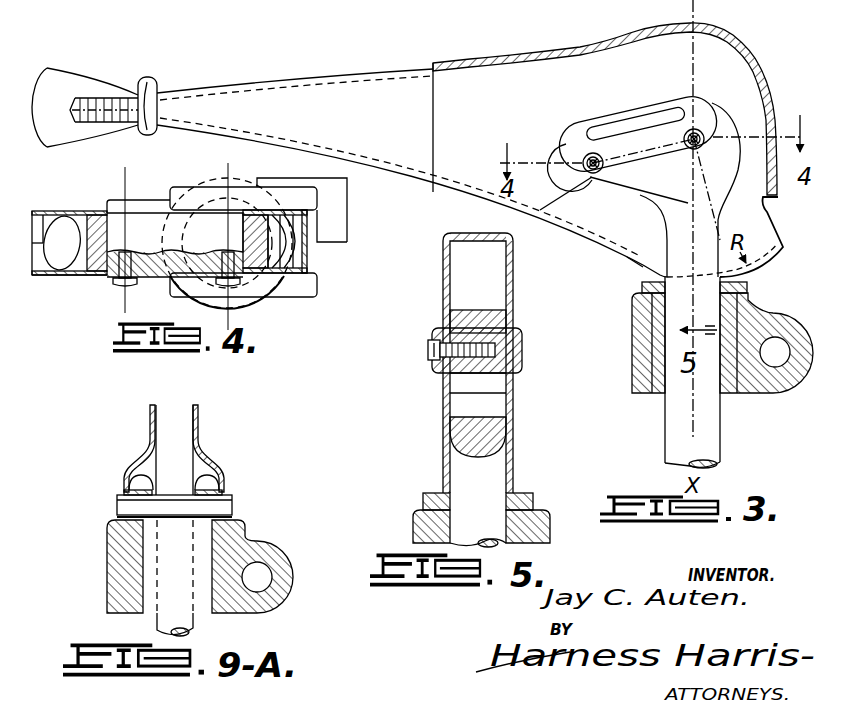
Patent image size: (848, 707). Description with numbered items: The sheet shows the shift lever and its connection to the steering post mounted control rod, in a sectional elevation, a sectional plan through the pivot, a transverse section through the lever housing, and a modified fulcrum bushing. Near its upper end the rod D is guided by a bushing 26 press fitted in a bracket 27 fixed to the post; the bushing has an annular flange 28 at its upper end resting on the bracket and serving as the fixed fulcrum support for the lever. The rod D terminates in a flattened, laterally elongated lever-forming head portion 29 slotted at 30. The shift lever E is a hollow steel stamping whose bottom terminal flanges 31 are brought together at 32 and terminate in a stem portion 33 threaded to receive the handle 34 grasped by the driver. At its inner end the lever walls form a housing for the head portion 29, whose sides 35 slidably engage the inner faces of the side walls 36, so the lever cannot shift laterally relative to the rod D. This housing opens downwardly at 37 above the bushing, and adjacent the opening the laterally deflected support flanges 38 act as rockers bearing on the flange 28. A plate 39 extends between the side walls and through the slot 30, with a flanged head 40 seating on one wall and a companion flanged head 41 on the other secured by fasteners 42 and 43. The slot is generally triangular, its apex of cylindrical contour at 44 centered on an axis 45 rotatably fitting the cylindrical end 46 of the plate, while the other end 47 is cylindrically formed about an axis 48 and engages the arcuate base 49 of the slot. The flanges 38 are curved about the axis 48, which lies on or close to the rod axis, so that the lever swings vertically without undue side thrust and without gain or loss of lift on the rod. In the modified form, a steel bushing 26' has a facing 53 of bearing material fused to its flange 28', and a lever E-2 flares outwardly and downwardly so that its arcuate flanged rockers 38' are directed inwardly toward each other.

In FIG. 3, the bushing 26 is at (696, 343).
In FIG. 5, the bushing 26 is at (543, 526).
In FIG. 4, the bracket 27 is at (330, 212).
In FIG. 3, the bracket 27 is at (633, 314).
In FIG. 4, the annular flange 28 is at (352, 227).
In FIG. 3, the annular flange 28 is at (721, 280).
In FIG. 5, the annular flange 28 is at (497, 516).
In FIG. 4, the lever-forming head portion 29 is at (250, 212).
In FIG. 3, the lever-forming head portion 29 is at (605, 117).
In FIG. 5, the lever-forming head portion 29 is at (455, 318).
In FIG. 3, the slot 30 is at (643, 200).
In FIG. 5, the slot 30 is at (456, 421).
In FIG. 4, the bottom terminal flanges 31 is at (72, 221).
In FIG. 4, the junction of the flanges 32 is at (45, 210).
In FIG. 4, the stem portion 33 is at (105, 92).
In FIG. 4, the handle 34 is at (68, 72).
In FIG. 4, the sides of the head 35 is at (88, 211).
In FIG. 5, the sides of the head 35 is at (507, 321).
In FIG. 4, the side walls 36 is at (48, 277).
In FIG. 5, the side walls 36 is at (500, 286).
In FIG. 3, the opening 37 is at (778, 230).
In FIG. 4, the support flanges 38 is at (254, 242).
In FIG. 3, the support flanges 38 is at (613, 271).
In FIG. 5, the support flanges 38 is at (475, 480).
In FIG. 4, the plate 39 is at (140, 211).
In FIG. 3, the plate 39 is at (640, 130).
In FIG. 5, the plate 39 is at (508, 378).
In FIG. 4, the flanged head 40 is at (120, 200).
In FIG. 5, the flanged head 40 is at (521, 336).
In FIG. 5, the companion flanged head 41 is at (445, 366).
In FIG. 4, the fastener 42 is at (118, 288).
In FIG. 3, the fastener 42 is at (592, 156).
In FIG. 4, the fastener 43 is at (232, 300).
In FIG. 3, the fastener 43 is at (702, 131).
In FIG. 5, the fastener 43 is at (430, 351).
In FIG. 3, the apex of the slot 44 is at (552, 213).
In FIG. 4, the axis 45 is at (127, 294).
In FIG. 3, the axis 45 is at (590, 158).
In FIG. 3, the cylindrical end of the plate 46 is at (580, 158).
In FIG. 3, the cylindrical end of the plate 47 is at (704, 136).
In FIG. 4, the axis 48 is at (227, 163).
In FIG. 3, the axis 48 is at (690, 128).
In FIG. 3, the base of the slot 49 is at (713, 162).
In FIG. 9A, the facing 53 is at (232, 499).
In FIG. 9A, the modified bushing 26' is at (101, 566).
In FIG. 9A, the bushing flange 28' is at (253, 561).
In FIG. 9A, the flanged rockers 38' is at (170, 467).
In FIG. 4, the rod D is at (317, 255).
In FIG. 3, the rod D is at (712, 432).
In FIG. 5, the rod D is at (460, 524).
In FIG. 9A, the rod D is at (200, 629).
In FIG. 3, the shift lever E is at (403, 67).
In FIG. 9A, the modified shift lever E-2 is at (200, 411).